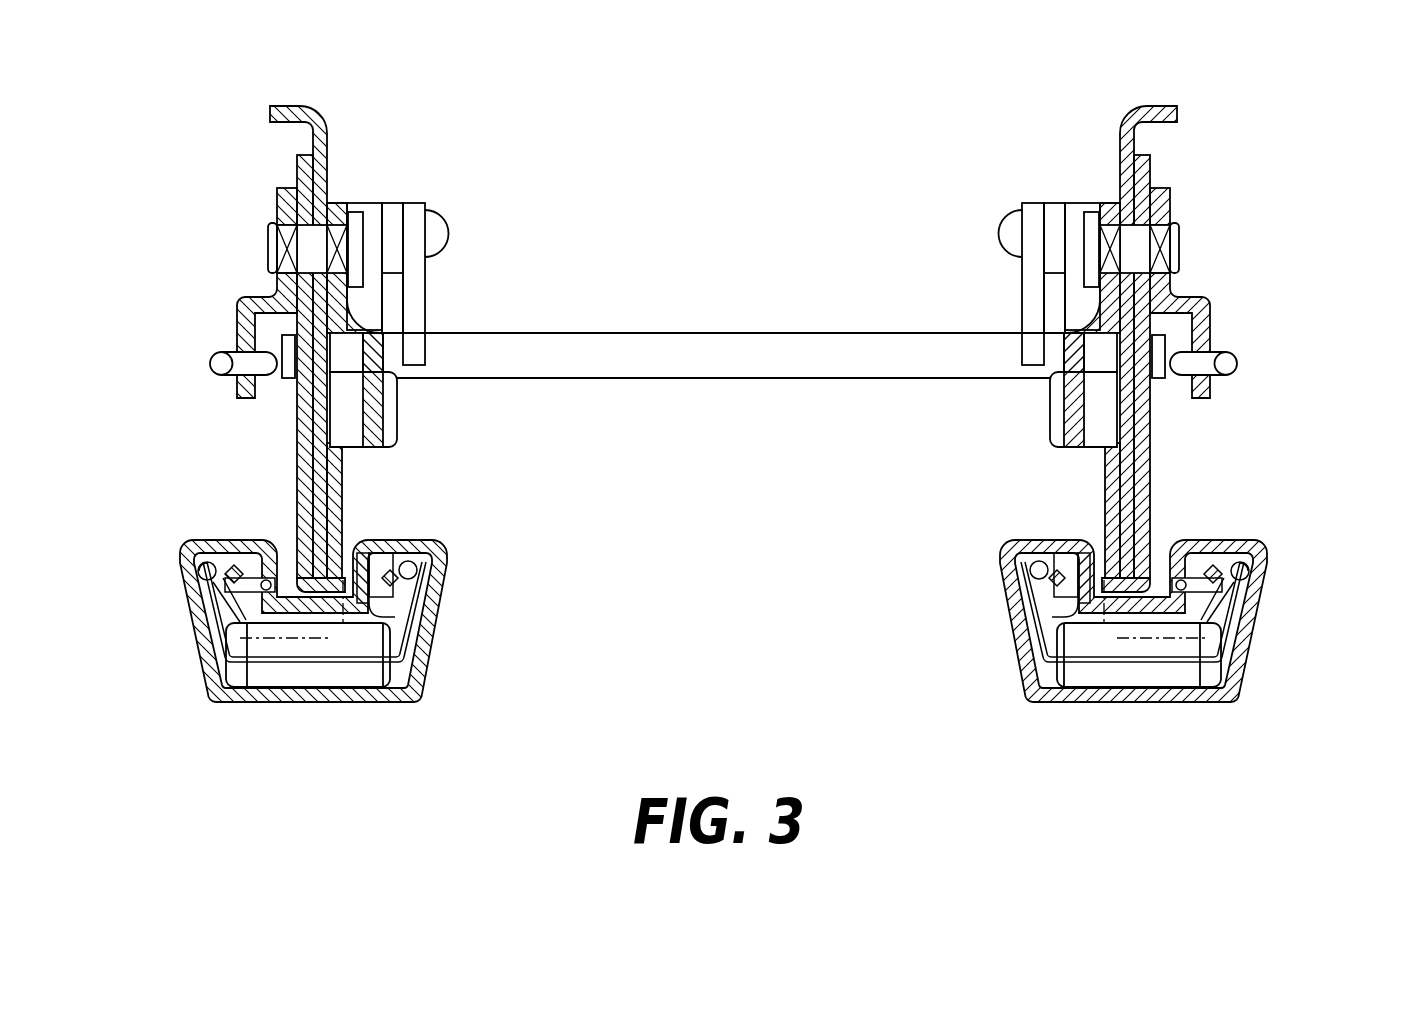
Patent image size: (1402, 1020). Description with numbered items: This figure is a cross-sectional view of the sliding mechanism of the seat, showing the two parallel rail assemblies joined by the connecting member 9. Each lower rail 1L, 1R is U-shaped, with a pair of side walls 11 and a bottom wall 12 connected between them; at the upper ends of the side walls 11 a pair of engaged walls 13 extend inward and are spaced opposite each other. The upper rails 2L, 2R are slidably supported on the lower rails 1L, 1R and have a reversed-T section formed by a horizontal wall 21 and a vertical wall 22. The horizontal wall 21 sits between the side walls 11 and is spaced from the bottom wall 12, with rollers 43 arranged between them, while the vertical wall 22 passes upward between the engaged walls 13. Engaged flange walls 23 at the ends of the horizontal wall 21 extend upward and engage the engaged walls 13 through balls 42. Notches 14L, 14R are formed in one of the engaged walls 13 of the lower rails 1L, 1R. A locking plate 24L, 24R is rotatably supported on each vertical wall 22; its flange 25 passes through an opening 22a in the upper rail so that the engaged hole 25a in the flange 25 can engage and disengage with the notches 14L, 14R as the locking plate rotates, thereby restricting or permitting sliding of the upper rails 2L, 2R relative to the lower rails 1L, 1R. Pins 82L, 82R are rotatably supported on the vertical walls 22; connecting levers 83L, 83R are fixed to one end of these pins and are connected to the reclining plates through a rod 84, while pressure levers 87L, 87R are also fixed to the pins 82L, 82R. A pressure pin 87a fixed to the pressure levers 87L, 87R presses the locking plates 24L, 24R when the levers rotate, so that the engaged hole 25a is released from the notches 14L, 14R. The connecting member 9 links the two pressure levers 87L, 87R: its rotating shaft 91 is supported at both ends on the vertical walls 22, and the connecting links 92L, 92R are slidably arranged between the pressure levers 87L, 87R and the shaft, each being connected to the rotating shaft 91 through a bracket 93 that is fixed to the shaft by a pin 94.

The lower rail 1L is at (410, 700).
The lower rail 1R is at (1174, 708).
The upper rail 2L is at (297, 433).
The upper rail 2R is at (1150, 448).
The connecting member 9 is at (713, 392).
The side wall 11 is at (437, 632).
The bottom wall 12 is at (330, 703).
The engaged wall 13 is at (223, 545).
The notch 14L is at (272, 588).
The notch 14R is at (1178, 590).
The horizontal wall 21 is at (357, 622).
The vertical wall 22 is at (1130, 298).
The opening 22a is at (300, 582).
The engaged flange wall 23 is at (235, 548).
The locking plate 24L is at (342, 487).
The locking plate 24R is at (1105, 487).
The flange 25 is at (232, 582).
The engaged hole 25a is at (266, 590).
The ball 42 is at (197, 563).
The roller 43 is at (375, 680).
The pin 82L is at (311, 240).
The pin 82R is at (1136, 240).
The connecting lever 83L is at (250, 305).
The connecting lever 83R is at (1205, 330).
The rod 84 is at (220, 360).
The pressure lever 87L is at (380, 318).
The pressure lever 87R is at (1067, 318).
The pressure pin 87a is at (355, 408).
The rotating shaft 91 is at (672, 348).
The connecting link 92L is at (393, 208).
The connecting link 92R is at (1054, 208).
The bracket 93 is at (415, 208).
The pin 94 is at (436, 238).